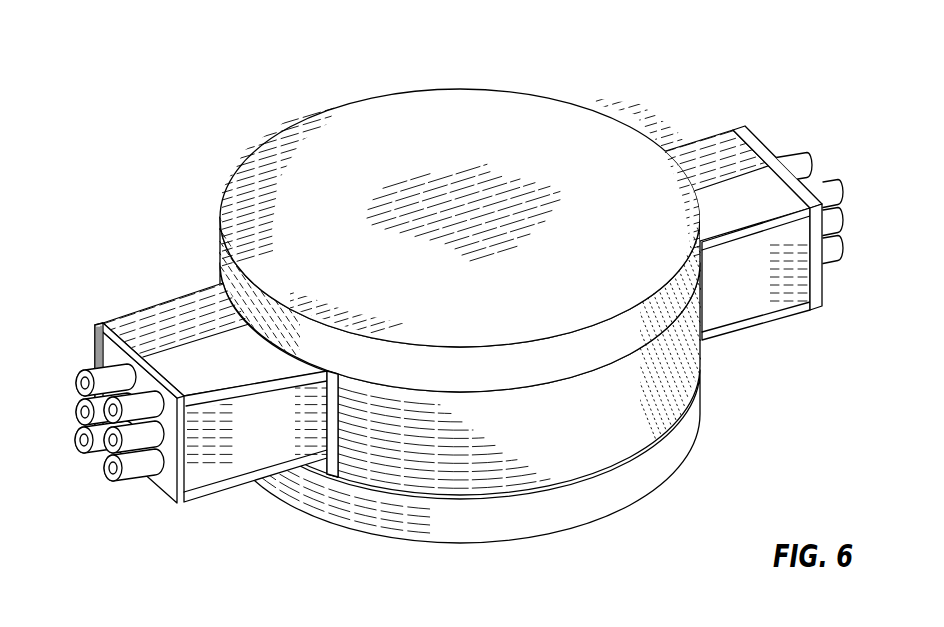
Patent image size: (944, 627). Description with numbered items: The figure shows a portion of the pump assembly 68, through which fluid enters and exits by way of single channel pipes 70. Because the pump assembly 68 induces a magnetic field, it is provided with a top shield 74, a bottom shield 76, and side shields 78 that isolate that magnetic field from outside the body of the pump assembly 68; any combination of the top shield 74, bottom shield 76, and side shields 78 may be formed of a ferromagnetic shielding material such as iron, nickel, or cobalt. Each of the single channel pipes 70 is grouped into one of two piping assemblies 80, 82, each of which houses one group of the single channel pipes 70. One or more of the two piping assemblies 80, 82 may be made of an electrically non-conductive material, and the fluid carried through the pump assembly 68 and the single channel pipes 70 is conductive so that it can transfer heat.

The pump assembly 68 is at (461, 309).
The single channel pipes 70 is at (76, 437).
The top shield 74 is at (607, 336).
The bottom shield 76 is at (482, 532).
The side shields 78 is at (218, 286).
The piping assembly 80 is at (137, 310).
The piping assembly 82 is at (200, 477).